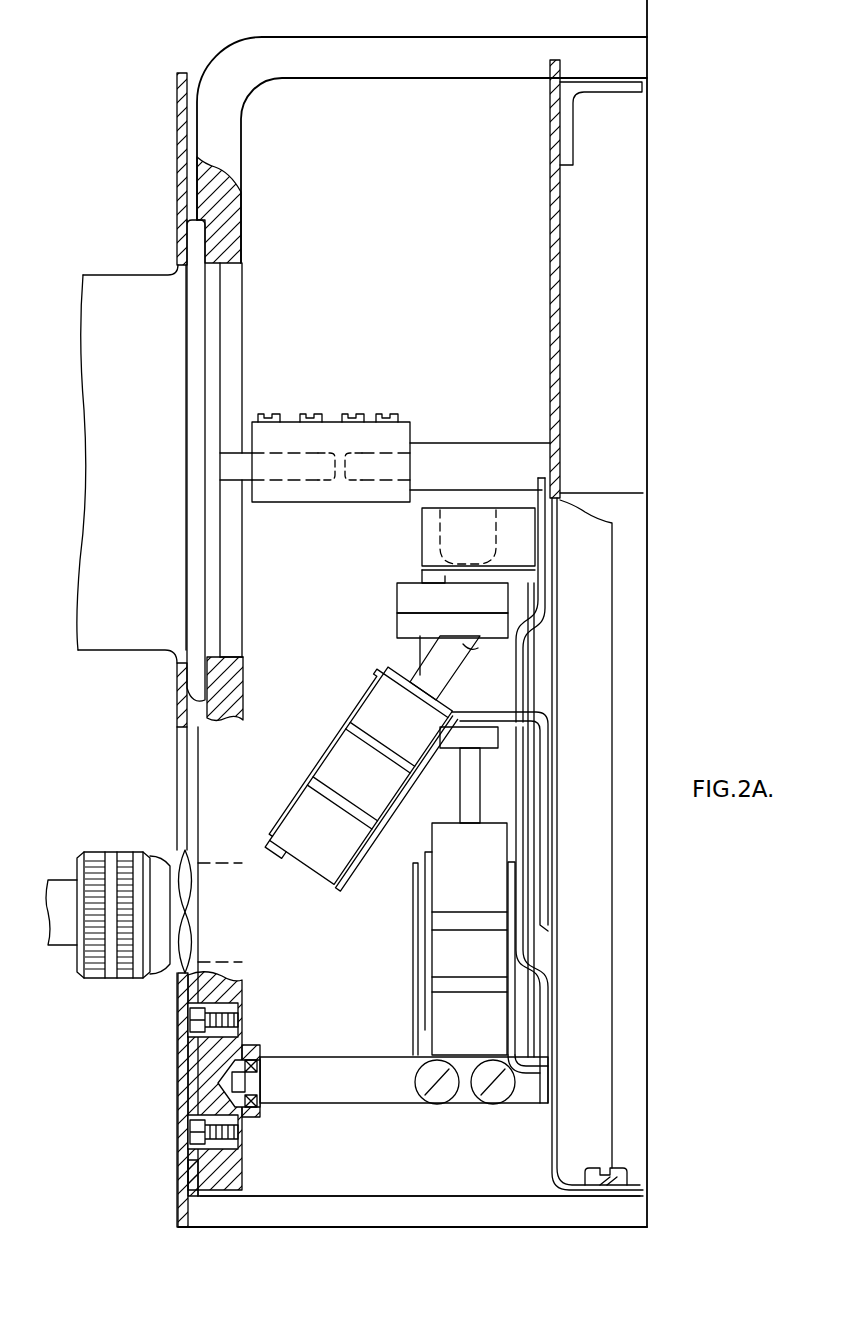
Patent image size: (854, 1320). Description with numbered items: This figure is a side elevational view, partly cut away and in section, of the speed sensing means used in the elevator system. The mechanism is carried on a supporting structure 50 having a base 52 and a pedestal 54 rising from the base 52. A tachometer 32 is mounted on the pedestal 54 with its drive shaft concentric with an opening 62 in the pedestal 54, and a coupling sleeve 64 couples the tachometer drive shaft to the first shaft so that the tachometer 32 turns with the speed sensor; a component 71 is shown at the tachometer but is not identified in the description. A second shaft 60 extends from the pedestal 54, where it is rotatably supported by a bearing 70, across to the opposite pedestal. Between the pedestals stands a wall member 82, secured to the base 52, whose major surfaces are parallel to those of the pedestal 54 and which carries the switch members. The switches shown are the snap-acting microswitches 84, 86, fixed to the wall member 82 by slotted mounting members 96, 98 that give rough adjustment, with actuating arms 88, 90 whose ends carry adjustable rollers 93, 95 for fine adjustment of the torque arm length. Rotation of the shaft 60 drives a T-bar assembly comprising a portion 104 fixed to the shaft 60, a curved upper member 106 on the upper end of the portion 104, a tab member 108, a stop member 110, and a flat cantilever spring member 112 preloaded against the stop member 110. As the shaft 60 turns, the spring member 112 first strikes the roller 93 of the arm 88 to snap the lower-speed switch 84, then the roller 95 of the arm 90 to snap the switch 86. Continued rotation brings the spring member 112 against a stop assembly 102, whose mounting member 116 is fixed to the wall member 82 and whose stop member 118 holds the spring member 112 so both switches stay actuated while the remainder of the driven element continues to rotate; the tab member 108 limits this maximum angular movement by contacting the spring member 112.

The tachometer 32 is at (135, 655).
The supporting structure 50 is at (383, 1228).
The base 52 is at (492, 1222).
The pedestal 54 is at (244, 1003).
The second shaft 60 is at (357, 1064).
The opening 62 is at (242, 632).
The coupling sleeve 64 is at (343, 505).
The bearing 70 is at (258, 1062).
The control knob 71 is at (55, 880).
The wall member 82 is at (549, 233).
The switch 84 is at (395, 949).
The switch 86 is at (348, 716).
The actuating arm 88 is at (463, 788).
The actuating arm 90 is at (423, 680).
The roller 93 is at (487, 742).
The roller 95 is at (476, 645).
The mounting member 96 is at (533, 1022).
The mounting member 98 is at (543, 733).
The stop assembly 102 is at (397, 602).
The portion 104 is at (531, 683).
The curved upper member 106 is at (421, 527).
The tab member 108 is at (445, 533).
The stop member 110 is at (425, 579).
The flat cantilever spring member 112 is at (418, 815).
The mounting member 116 is at (540, 484).
The stop member 118 is at (397, 631).